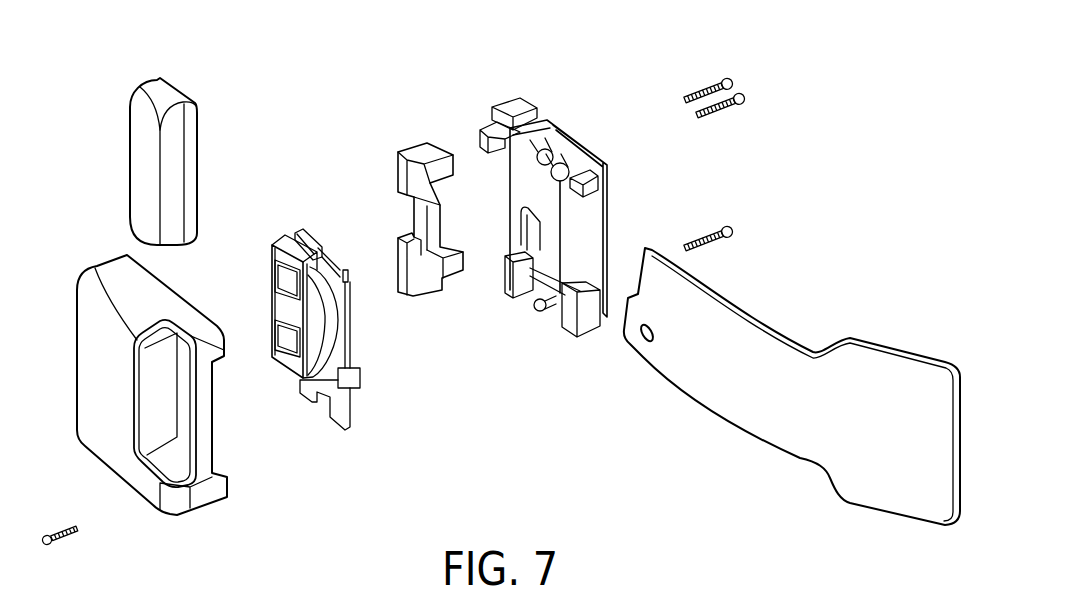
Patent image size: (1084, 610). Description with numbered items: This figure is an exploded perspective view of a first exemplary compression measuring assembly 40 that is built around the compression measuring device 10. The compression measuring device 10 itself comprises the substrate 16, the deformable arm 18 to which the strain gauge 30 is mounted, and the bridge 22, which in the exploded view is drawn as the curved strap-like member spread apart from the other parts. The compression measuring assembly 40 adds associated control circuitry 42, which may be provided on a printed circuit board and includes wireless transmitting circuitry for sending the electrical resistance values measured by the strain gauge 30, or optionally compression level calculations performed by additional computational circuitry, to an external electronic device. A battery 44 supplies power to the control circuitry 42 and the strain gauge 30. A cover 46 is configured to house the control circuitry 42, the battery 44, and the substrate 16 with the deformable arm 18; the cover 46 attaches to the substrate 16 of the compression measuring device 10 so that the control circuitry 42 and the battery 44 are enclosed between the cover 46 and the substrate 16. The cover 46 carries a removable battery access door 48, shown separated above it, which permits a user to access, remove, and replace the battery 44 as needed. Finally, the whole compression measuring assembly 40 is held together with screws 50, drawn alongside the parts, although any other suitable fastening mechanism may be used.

The compression measuring device 10 is at (664, 208).
The substrate 16 is at (548, 113).
The deformable arm 18 is at (421, 162).
The bridge 22 is at (778, 375).
The strain gauge 30 is at (383, 177).
The compression measuring assembly 40 is at (319, 92).
The control circuitry 42 is at (342, 407).
The battery 44 is at (267, 262).
The cover 46 is at (113, 445).
The removable battery access door 48 is at (143, 147).
The screws 50 is at (708, 88).